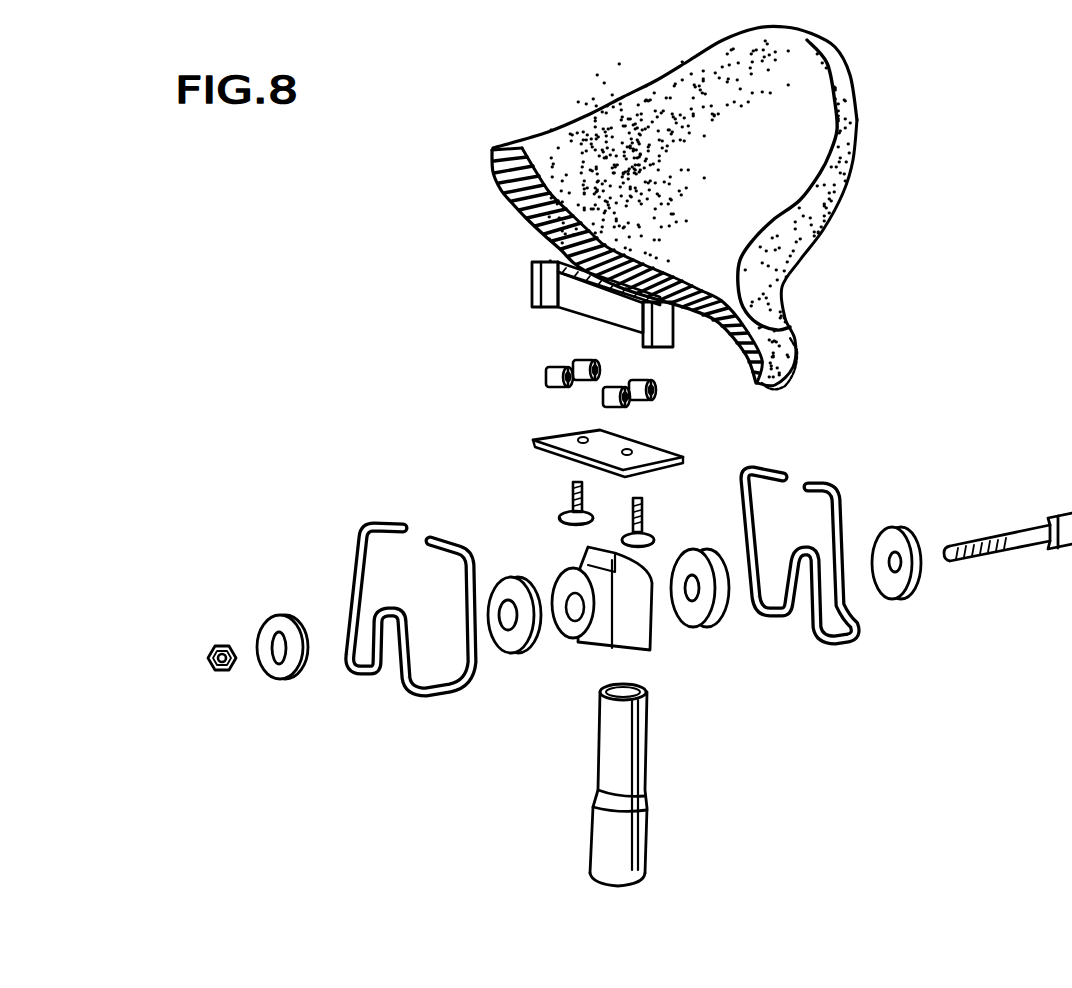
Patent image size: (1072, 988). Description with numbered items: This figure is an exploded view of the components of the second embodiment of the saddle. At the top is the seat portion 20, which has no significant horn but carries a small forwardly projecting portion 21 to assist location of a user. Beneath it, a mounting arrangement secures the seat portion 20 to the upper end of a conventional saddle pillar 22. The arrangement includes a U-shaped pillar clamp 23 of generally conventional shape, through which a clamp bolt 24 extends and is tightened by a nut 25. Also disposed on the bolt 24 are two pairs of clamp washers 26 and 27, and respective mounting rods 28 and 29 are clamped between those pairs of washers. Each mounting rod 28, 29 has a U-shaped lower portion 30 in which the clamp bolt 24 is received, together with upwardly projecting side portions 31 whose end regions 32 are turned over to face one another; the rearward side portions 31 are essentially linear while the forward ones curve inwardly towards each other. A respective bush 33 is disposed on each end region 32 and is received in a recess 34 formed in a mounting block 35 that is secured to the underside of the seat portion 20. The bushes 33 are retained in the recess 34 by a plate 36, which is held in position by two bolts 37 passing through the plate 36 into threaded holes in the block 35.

The seat portion 20 is at (608, 138).
The forwardly projecting portion 21 is at (790, 327).
The saddle pillar 22 is at (642, 833).
The pillar clamp 23 is at (577, 565).
The clamp bolt 24 is at (1010, 557).
The nut 25 is at (215, 672).
The clamp washers 26 is at (283, 672).
The clamp washers 27 is at (702, 607).
The mounting rod 28 is at (381, 552).
The mounting rod 29 is at (637, 570).
The U-shaped lower portion 30 is at (391, 625).
The side portions 31 is at (473, 643).
The end regions 32 is at (441, 540).
The bush 33 is at (545, 366).
The recess 34 is at (567, 300).
The mounting block 35 is at (538, 282).
The plate 36 is at (555, 437).
The bolts 37 is at (570, 506).